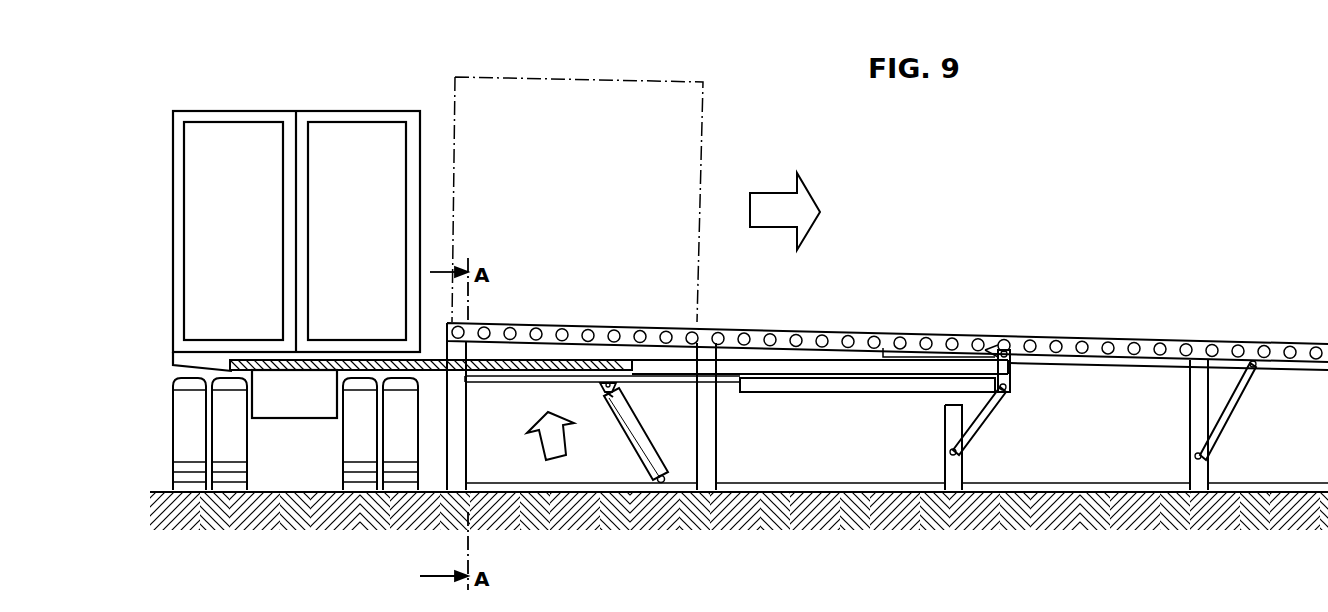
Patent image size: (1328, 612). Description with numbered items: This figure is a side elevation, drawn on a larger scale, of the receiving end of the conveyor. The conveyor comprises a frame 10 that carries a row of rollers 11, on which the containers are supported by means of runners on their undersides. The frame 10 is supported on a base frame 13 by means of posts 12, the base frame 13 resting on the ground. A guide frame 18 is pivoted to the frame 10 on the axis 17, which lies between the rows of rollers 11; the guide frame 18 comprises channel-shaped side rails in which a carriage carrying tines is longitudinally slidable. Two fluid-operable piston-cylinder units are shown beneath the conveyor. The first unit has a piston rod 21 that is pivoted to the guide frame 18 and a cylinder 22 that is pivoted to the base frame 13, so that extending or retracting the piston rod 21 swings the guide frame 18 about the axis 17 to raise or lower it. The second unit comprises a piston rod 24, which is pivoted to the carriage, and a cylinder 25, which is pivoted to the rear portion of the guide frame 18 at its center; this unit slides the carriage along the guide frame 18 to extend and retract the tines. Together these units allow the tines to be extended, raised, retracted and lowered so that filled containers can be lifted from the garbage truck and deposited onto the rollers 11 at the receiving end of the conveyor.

The frame 10 is at (833, 335).
The rollers 11 is at (744, 333).
The posts 12 is at (716, 425).
The base frame 13 is at (1035, 484).
The axis 17 is at (1000, 346).
The guide frame 18 is at (820, 375).
The piston rod 21 is at (610, 392).
The cylinder 22 is at (640, 440).
The piston rod 24 is at (676, 384).
The cylinder 25 is at (889, 393).